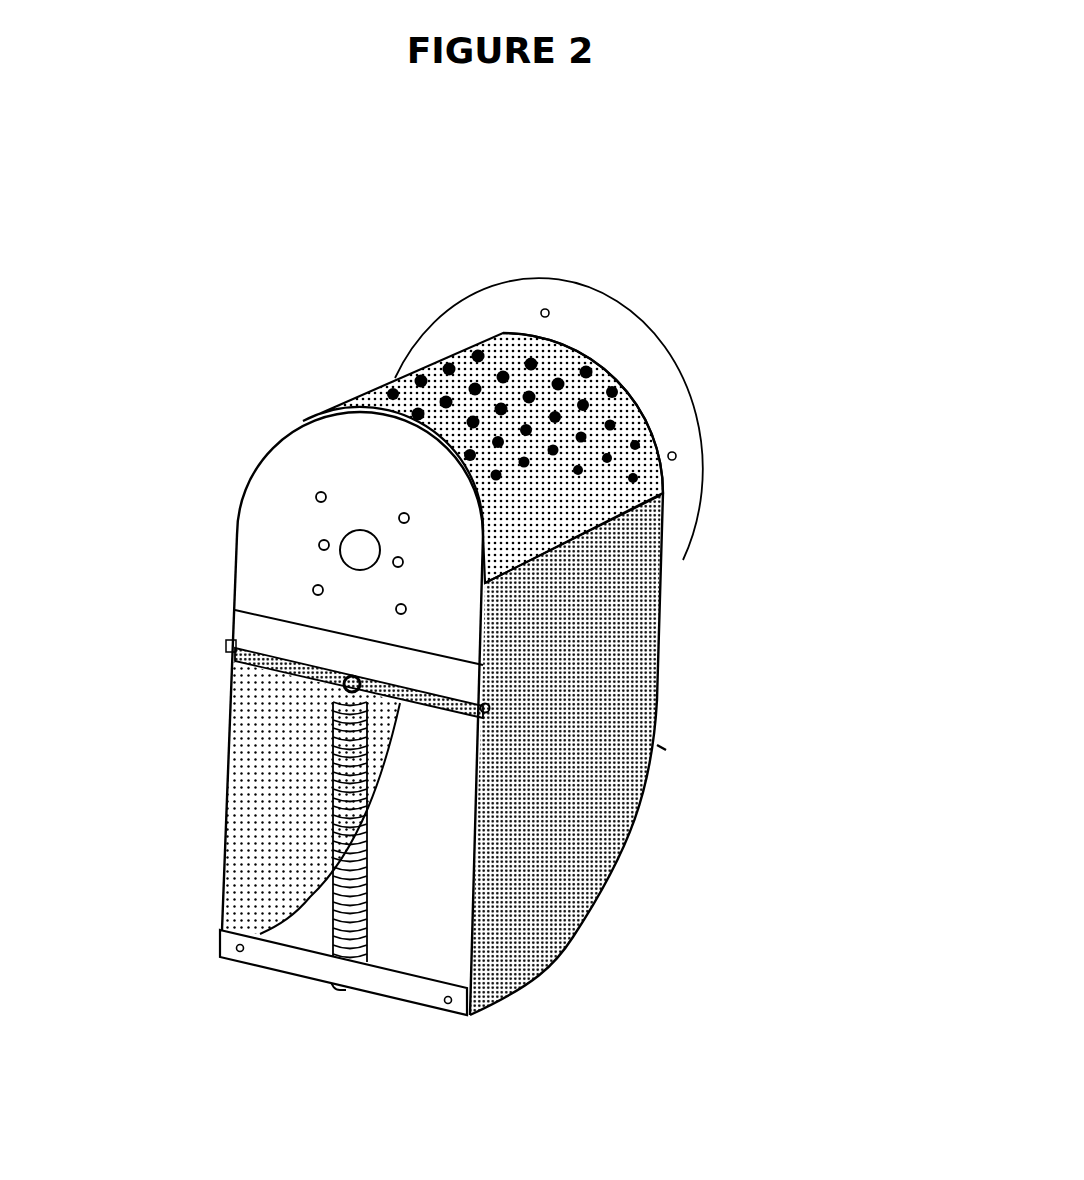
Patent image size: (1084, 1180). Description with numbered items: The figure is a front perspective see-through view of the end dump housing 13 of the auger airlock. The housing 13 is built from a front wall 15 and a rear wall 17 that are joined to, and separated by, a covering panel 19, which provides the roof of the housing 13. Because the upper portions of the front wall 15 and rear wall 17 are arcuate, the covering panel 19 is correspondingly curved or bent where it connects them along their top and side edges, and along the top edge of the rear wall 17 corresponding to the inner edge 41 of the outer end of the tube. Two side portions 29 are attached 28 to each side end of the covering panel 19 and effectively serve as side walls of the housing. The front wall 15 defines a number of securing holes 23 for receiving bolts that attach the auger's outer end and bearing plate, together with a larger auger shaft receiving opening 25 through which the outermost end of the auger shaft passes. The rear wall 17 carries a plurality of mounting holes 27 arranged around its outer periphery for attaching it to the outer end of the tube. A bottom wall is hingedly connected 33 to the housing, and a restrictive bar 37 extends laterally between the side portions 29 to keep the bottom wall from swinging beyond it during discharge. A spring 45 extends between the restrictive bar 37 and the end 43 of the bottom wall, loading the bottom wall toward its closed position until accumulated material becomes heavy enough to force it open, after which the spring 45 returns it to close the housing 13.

The housing 13 is at (747, 823).
The front wall 15 is at (258, 538).
The rear wall 17 is at (606, 345).
The covering panel 19 is at (448, 393).
The securing holes 23 is at (320, 492).
The auger shaft receiving opening 25 is at (362, 548).
The mounting holes 27 is at (548, 308).
The attachment 28 is at (653, 503).
The side portions 29 is at (248, 873).
The hinged connection 33 is at (489, 708).
The restrictive bar 37 is at (430, 997).
The inner edge 41 is at (628, 392).
The end of the bottom wall 43 is at (270, 666).
The spring 45 is at (340, 927).